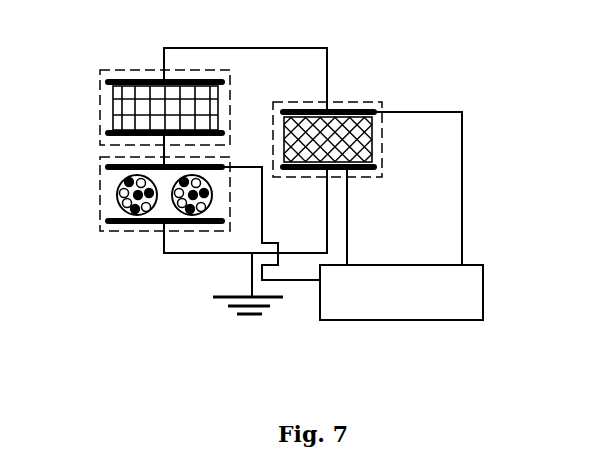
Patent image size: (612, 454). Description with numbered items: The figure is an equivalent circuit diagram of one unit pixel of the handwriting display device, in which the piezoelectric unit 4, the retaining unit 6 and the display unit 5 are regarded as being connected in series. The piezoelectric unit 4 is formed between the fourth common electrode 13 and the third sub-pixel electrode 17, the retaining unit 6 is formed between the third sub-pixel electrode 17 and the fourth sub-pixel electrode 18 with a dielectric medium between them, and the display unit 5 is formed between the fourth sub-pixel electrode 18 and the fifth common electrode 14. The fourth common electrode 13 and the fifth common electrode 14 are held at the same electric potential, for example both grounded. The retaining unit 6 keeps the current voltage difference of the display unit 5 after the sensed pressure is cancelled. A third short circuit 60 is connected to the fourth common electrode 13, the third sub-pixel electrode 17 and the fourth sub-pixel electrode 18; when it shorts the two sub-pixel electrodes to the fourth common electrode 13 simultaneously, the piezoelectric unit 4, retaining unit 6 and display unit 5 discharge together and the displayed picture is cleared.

The piezoelectric unit 4 is at (383, 143).
The display unit 5 is at (100, 218).
The retaining unit 6 is at (100, 106).
The fourth common electrode 13 is at (363, 168).
The fifth common electrode 14 is at (122, 223).
The third sub-pixel electrode 17 is at (132, 80).
The fourth sub-pixel electrode 18 is at (108, 137).
The third short circuit 60 is at (472, 265).